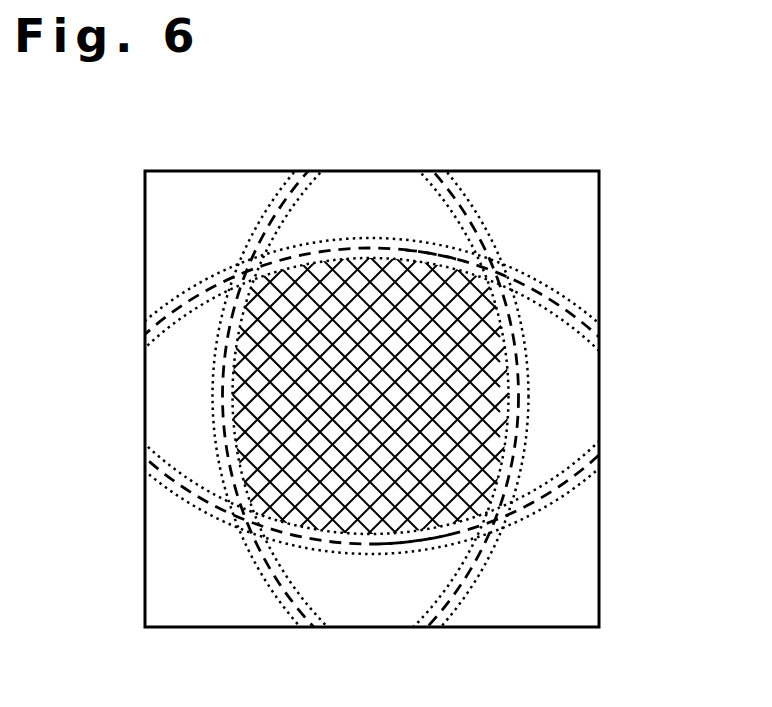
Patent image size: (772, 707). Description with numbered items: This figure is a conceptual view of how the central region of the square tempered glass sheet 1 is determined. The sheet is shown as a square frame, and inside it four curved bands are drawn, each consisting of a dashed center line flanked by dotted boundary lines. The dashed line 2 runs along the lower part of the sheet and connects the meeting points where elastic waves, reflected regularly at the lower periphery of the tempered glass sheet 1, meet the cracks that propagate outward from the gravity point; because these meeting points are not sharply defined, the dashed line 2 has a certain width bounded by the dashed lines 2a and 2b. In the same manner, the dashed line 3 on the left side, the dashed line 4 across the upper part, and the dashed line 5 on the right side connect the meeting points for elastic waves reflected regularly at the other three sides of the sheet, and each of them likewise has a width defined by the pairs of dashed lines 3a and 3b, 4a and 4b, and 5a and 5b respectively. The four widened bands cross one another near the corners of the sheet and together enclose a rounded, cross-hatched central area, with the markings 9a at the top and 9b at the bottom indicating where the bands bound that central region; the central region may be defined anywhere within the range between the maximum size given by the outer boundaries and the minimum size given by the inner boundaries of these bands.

The tempered glass sheet 1 is at (145, 271).
The dashed line 2 is at (175, 482).
The dashed line 2a is at (190, 480).
The dashed line 2b is at (165, 487).
The dashed line 3 is at (222, 398).
The dashed line 3a is at (212, 372).
The dashed line 3b is at (232, 424).
The dashed line 4 is at (560, 309).
The dashed line 4a is at (563, 333).
The dashed line 4b is at (538, 283).
The dashed line 5 is at (520, 404).
The dashed line 5a is at (509, 432).
The dashed line 5b is at (530, 388).
The region 9a is at (432, 251).
The region 9b is at (420, 540).